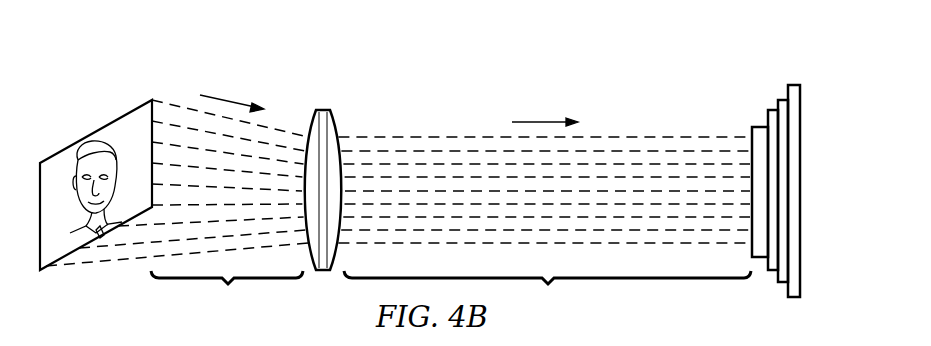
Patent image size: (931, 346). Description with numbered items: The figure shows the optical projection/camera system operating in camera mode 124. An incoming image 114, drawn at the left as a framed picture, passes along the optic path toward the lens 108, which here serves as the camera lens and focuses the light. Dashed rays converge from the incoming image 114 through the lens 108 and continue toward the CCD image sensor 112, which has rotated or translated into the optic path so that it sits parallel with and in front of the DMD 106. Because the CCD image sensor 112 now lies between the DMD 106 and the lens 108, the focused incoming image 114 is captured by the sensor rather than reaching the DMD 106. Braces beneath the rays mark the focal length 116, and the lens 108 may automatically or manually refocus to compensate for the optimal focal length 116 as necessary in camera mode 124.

The DMD 106 is at (795, 85).
The lens 108 is at (322, 110).
The CCD image sensor 112 is at (760, 127).
The incoming image 114 is at (96, 130).
The focal length 116 is at (451, 291).
The camera mode 124 is at (404, 64).